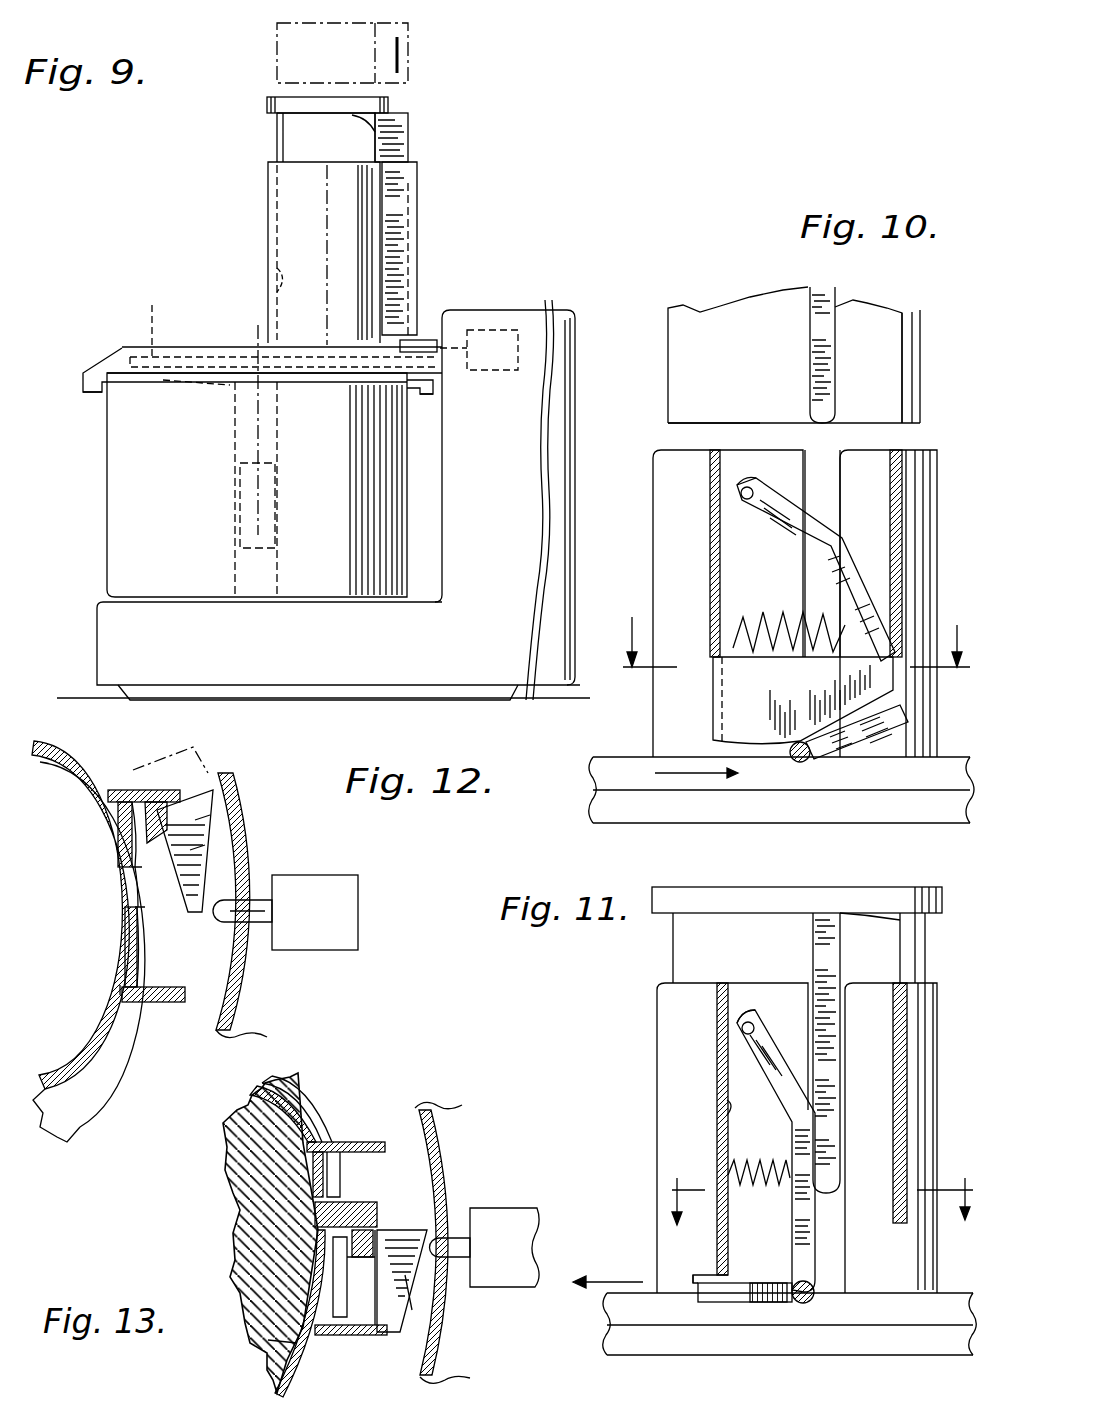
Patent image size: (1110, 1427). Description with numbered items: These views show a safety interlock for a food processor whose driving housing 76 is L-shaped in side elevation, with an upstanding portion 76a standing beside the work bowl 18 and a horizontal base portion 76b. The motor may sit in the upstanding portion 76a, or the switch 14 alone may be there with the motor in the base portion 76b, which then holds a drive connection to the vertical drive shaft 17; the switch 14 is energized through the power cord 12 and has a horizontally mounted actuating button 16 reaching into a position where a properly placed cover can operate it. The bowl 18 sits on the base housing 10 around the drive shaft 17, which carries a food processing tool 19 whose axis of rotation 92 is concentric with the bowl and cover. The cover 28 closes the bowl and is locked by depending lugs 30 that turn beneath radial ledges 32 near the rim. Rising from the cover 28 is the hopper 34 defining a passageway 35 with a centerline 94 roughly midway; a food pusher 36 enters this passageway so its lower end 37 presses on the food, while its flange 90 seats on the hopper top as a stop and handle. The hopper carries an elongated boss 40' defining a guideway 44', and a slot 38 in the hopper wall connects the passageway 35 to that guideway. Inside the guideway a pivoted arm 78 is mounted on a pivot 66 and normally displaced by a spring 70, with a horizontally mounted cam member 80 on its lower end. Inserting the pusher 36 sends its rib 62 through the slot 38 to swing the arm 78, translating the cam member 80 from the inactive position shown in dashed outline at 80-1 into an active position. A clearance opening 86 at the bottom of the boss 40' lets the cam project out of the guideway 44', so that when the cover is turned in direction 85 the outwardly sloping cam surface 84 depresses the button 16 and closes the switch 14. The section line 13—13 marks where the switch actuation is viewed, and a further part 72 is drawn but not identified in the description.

In FIG. 9, the base housing 10 is at (445, 53).
In FIG. 10, the power cord 12 is at (794, 656).
In FIG. 11, the section line 13— 13 is at (825, 1213).
In FIG. 9, the switch 14 is at (550, 300).
In FIG. 12, the switch 14 is at (352, 875).
In FIG. 13, the switch 14 is at (525, 1208).
In FIG. 9, the actuating button 16 is at (470, 330).
In FIG. 10, the actuating button 16 is at (796, 762).
In FIG. 11, the actuating button 16 is at (812, 1303).
In FIG. 12, the actuating button 16 is at (257, 900).
In FIG. 13, the actuating button 16 is at (452, 1238).
In FIG. 9, the drive shaft 17 is at (240, 572).
In FIG. 9, the work bowl 18 is at (410, 215).
In FIG. 9, the food processing tool 19 is at (134, 321).
In FIG. 9, the cover 28 is at (188, 347).
In FIG. 10, the cover 28 is at (607, 757).
In FIG. 11, the cover 28 is at (957, 1293).
In FIG. 12, the cover 28 is at (92, 1140).
In FIG. 13, the cover 28 is at (297, 1078).
In FIG. 9, the depending lugs 30 is at (100, 360).
In FIG. 9, the radial ledges 32 is at (103, 391).
In FIG. 9, the hopper 34 is at (268, 229).
In FIG. 10, the hopper 34 is at (662, 520).
In FIG. 11, the hopper 34 is at (657, 1058).
In FIG. 12, the hopper 34 is at (90, 1078).
In FIG. 13, the hopper 34 is at (298, 1087).
In FIG. 9, the passageway 35 is at (272, 277).
In FIG. 12, the passageway 35 is at (120, 990).
In FIG. 13, the passageway 35 is at (268, 1340).
In FIG. 9, the food pusher 36 is at (286, 147).
In FIG. 10, the food pusher 36 is at (683, 378).
In FIG. 11, the food pusher 36 is at (673, 955).
In FIG. 13, the food pusher 36 is at (240, 1230).
In FIG. 10, the lower end of the pusher 37 is at (700, 425).
In FIG. 10, the slot 38 is at (840, 470).
In FIG. 11, the slot 38 is at (840, 977).
In FIG. 12, the slot 38 is at (125, 905).
In FIG. 13, the slot 38 is at (335, 1253).
In FIG. 9, the elongated boss 40' is at (451, 246).
In FIG. 10, the elongated boss 40' is at (911, 603).
In FIG. 11, the elongated boss 40' is at (914, 1138).
In FIG. 12, the elongated boss 40' is at (146, 888).
In FIG. 13, the elongated boss 40' is at (375, 1123).
In FIG. 10, the guideway 44' is at (780, 597).
In FIG. 11, the guideway 44' is at (821, 1103).
In FIG. 12, the guideway 44' is at (119, 895).
In FIG. 13, the guideway 44' is at (351, 1243).
In FIG. 9, the rib 62 is at (398, 130).
In FIG. 10, the rib 62 is at (827, 343).
In FIG. 11, the rib 62 is at (842, 930).
In FIG. 13, the rib 62 is at (348, 1202).
In FIG. 10, the pivot 66 is at (752, 490).
In FIG. 11, the pivot 66 is at (754, 1022).
In FIG. 10, the spring 70 is at (765, 632).
In FIG. 11, the spring 70 is at (750, 1160).
In FIG. 13, the guide strip 72 is at (337, 1233).
In FIG. 9, the driving housing 76 is at (338, 640).
In FIG. 9, the upstanding portion 76a is at (574, 312).
In FIG. 12, the upstanding portion 76a is at (240, 776).
In FIG. 13, the upstanding portion 76a is at (445, 1106).
In FIG. 9, the base portion 76b is at (105, 647).
In FIG. 10, the pivoted arm 78 is at (845, 578).
In FIG. 11, the pivoted arm 78 is at (792, 1225).
In FIG. 12, the pivoted arm 78 is at (140, 820).
In FIG. 9, the cam member 80 is at (437, 340).
In FIG. 10, the cam member 80 is at (882, 745).
In FIG. 11, the cam member 80 is at (772, 1302).
In FIG. 12, the cam member 80 is at (215, 822).
In FIG. 13, the cam member 80 is at (398, 1268).
In FIG. 12, the inactive position of cam member 80-1 is at (200, 752).
In FIG. 10, the cam surface 84 is at (842, 750).
In FIG. 11, the cam surface 84 is at (795, 1254).
In FIG. 12, the cam surface 84 is at (210, 856).
In FIG. 13, the cam surface 84 is at (408, 1300).
In FIG. 11, the direction of cover rotation 85 is at (608, 1264).
In FIG. 10, the clearance opening 86 is at (900, 690).
In FIG. 11, the clearance opening 86 is at (693, 1275).
In FIG. 9, the flange 90 is at (267, 103).
In FIG. 11, the flange 90 is at (942, 890).
In FIG. 9, the axis of rotation 92 is at (258, 420).
In FIG. 9, the centerline 94 is at (327, 220).